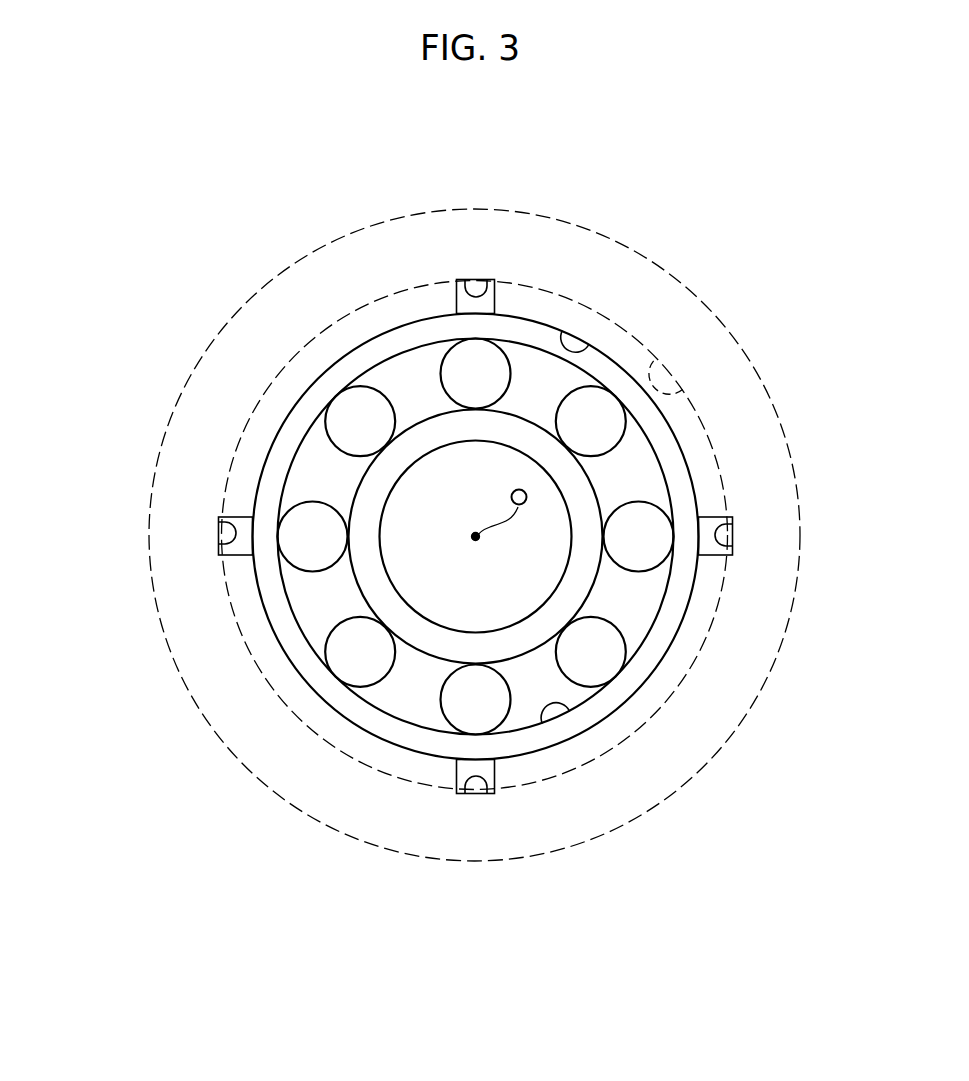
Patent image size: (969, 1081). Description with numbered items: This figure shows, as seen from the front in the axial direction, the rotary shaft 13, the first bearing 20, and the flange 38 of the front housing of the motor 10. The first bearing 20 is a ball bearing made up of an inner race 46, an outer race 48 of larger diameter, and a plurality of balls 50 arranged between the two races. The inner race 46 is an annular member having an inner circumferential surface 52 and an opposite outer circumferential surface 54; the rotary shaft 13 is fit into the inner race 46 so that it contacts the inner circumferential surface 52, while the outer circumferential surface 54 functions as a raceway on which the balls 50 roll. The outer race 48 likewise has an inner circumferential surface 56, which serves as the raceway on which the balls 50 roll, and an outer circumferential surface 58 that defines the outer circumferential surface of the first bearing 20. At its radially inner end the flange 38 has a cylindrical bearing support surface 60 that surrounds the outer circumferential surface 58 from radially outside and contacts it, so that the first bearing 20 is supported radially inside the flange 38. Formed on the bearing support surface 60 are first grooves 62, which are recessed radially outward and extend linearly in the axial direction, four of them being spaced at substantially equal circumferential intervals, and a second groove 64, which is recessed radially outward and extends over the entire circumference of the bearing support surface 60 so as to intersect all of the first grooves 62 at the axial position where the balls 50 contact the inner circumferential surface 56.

The motor 10 is at (836, 134).
The rotary shaft 13 is at (527, 575).
The first bearing 20 is at (477, 588).
The flange 38 is at (295, 322).
The inner race 46 is at (361, 655).
The outer race 48 is at (539, 560).
The balls 50 is at (342, 648).
The inner circumferential surface 52 is at (402, 475).
The outer circumferential surface 54 is at (357, 487).
The inner circumferential surface 56 is at (553, 705).
The outer circumferential surface 58 is at (692, 598).
The bearing support surface 60 is at (580, 352).
The first grooves 62 is at (464, 279).
The second groove 64 is at (690, 392).